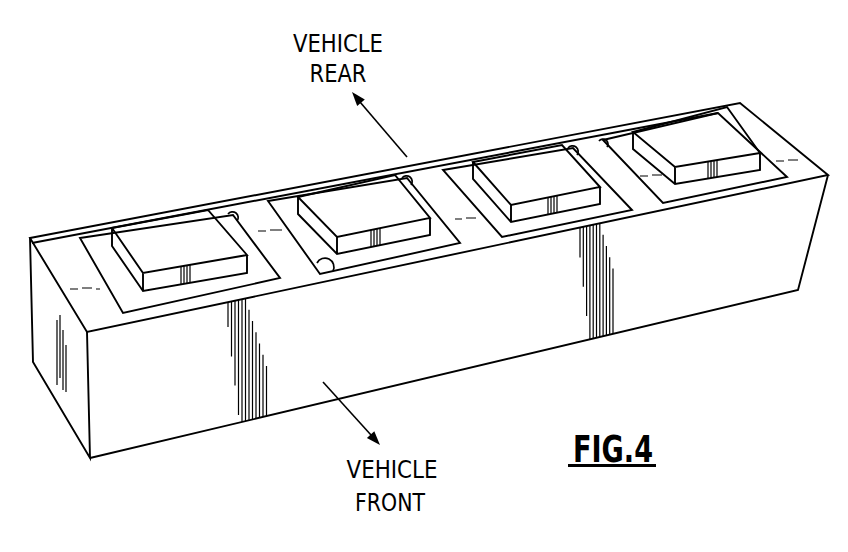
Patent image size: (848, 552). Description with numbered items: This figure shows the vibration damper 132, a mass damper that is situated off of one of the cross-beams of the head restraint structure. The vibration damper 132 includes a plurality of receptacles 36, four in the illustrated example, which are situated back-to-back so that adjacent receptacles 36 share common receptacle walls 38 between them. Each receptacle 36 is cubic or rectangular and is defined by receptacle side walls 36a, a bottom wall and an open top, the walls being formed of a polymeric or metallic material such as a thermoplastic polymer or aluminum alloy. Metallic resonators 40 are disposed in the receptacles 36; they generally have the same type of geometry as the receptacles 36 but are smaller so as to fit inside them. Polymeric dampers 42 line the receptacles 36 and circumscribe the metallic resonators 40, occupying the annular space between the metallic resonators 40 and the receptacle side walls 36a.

The vibration damper 132 is at (262, 450).
The receptacle 36 is at (247, 206).
The receptacle side wall 36a is at (233, 216).
The common receptacle wall 38 is at (597, 158).
The metallic resonator 40 is at (193, 253).
The polymeric damper 42 is at (100, 245).